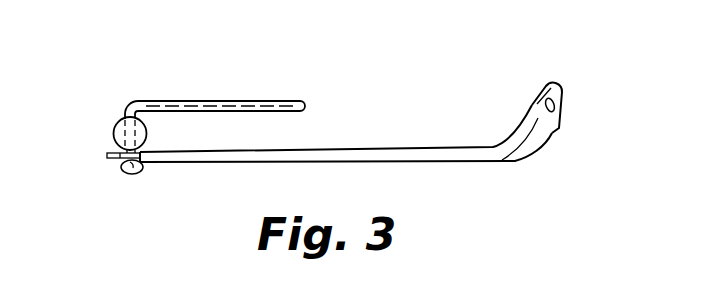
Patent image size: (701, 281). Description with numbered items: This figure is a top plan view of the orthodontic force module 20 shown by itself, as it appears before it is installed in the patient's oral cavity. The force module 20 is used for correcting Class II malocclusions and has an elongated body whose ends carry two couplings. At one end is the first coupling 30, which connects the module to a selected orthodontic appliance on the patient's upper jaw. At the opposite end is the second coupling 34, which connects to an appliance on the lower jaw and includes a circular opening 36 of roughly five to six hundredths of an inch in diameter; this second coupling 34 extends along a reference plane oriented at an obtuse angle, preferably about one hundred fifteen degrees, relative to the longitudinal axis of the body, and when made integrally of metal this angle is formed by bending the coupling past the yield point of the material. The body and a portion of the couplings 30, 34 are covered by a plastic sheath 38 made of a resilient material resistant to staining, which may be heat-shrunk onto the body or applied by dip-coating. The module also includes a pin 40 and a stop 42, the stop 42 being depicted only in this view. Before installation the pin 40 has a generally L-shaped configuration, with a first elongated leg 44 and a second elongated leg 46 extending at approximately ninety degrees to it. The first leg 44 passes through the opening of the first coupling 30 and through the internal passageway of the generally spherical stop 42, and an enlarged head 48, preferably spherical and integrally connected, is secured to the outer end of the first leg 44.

The orthodontic force module 20 is at (412, 90).
The first coupling 30 is at (107, 155).
The second coupling 34 is at (535, 100).
The circular opening 36 is at (557, 104).
The plastic sheath 38 is at (325, 163).
The pin 40 is at (173, 100).
The stop 42 is at (113, 127).
The first elongated leg 44 is at (153, 131).
The second elongated leg 46 is at (248, 100).
The enlarged head 48 is at (124, 176).